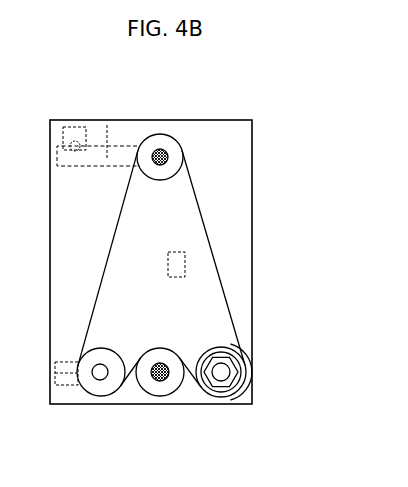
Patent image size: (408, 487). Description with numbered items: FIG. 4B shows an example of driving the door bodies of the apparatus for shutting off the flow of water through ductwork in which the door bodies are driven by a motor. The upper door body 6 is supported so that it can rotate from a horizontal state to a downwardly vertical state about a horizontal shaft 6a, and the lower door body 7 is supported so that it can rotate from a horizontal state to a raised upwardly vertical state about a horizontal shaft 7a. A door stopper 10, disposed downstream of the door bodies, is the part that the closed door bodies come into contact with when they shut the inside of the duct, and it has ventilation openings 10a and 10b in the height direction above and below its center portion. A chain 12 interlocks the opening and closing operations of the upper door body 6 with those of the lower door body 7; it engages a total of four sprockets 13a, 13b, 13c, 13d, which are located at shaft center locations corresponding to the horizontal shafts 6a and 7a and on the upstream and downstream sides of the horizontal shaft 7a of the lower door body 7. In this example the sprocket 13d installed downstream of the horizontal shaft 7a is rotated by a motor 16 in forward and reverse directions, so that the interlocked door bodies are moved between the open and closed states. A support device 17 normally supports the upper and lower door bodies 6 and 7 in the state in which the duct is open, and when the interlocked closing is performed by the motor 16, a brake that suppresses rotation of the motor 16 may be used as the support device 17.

The upper door body 6 is at (99, 119).
The horizontal shaft 6a is at (160, 150).
The lower door body 7 is at (66, 390).
The horizontal shaft 7a is at (162, 382).
The door stopper 10 is at (186, 258).
The ventilation opening 10a is at (178, 199).
The ventilation opening 10b is at (178, 318).
The chain 12 is at (120, 213).
The sprocket 13a is at (190, 174).
The sprocket 13b is at (147, 397).
The sprocket 13c is at (100, 348).
The sprocket 13d is at (242, 355).
The motor 16 is at (218, 398).
The support device 17 is at (75, 117).